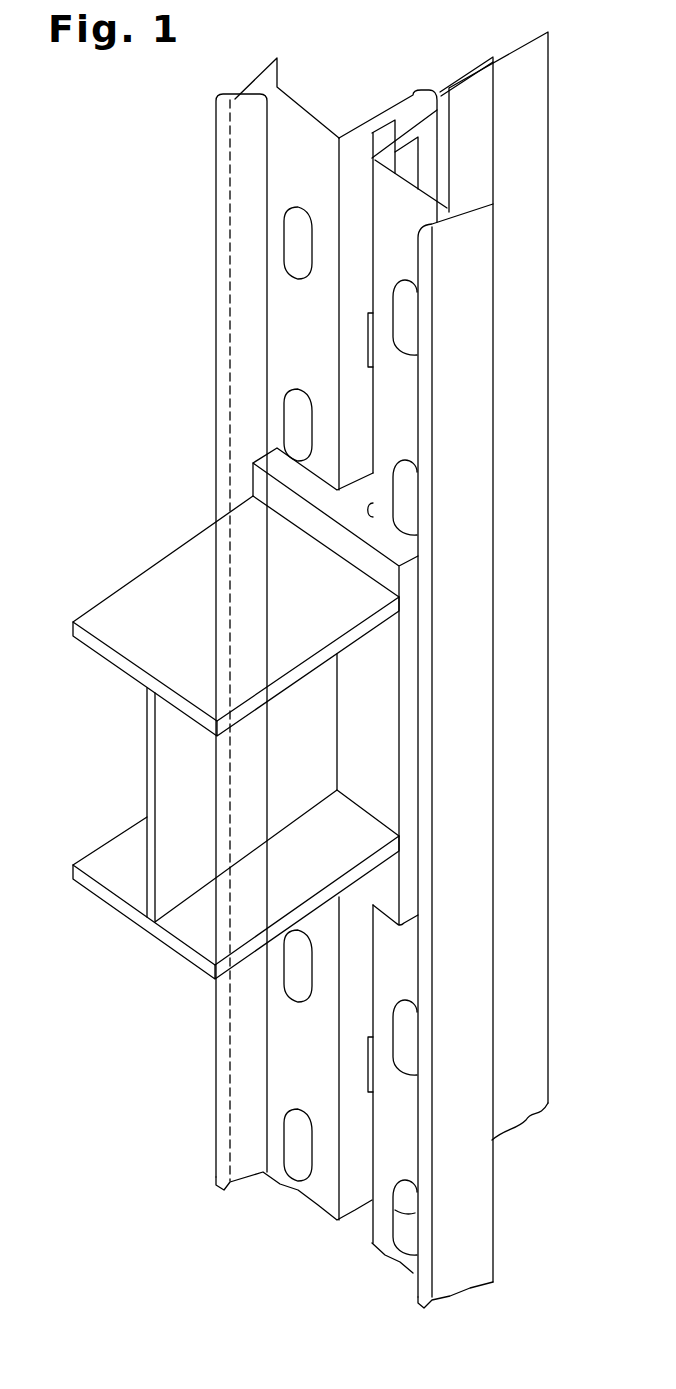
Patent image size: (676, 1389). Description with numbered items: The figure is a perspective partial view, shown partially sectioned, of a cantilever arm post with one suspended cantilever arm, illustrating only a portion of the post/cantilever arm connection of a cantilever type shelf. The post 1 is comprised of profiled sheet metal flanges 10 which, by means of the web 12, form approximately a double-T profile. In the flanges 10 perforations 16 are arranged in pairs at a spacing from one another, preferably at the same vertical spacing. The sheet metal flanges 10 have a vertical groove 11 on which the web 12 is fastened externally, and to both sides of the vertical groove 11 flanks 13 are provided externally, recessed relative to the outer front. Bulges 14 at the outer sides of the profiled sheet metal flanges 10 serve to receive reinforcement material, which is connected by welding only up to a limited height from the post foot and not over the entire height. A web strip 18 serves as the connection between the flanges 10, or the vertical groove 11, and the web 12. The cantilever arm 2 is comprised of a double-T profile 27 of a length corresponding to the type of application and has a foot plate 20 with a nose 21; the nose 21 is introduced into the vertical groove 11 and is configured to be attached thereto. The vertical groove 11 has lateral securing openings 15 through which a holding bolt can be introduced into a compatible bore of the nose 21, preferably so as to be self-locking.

The post 1 is at (178, 1089).
The cantilever arm 2 is at (120, 745).
The profiled sheet metal flange 10 is at (220, 188).
The vertical groove 11 is at (365, 1212).
The web 12 is at (520, 1100).
The flank 13 is at (378, 1277).
The bulge 14 is at (237, 96).
The lateral securing opening 15 is at (383, 133).
The perforation 16 is at (298, 253).
The web strip 18 is at (458, 78).
The foot plate 20 is at (395, 551).
The nose 21 is at (368, 489).
The double-T profile 27 is at (130, 908).